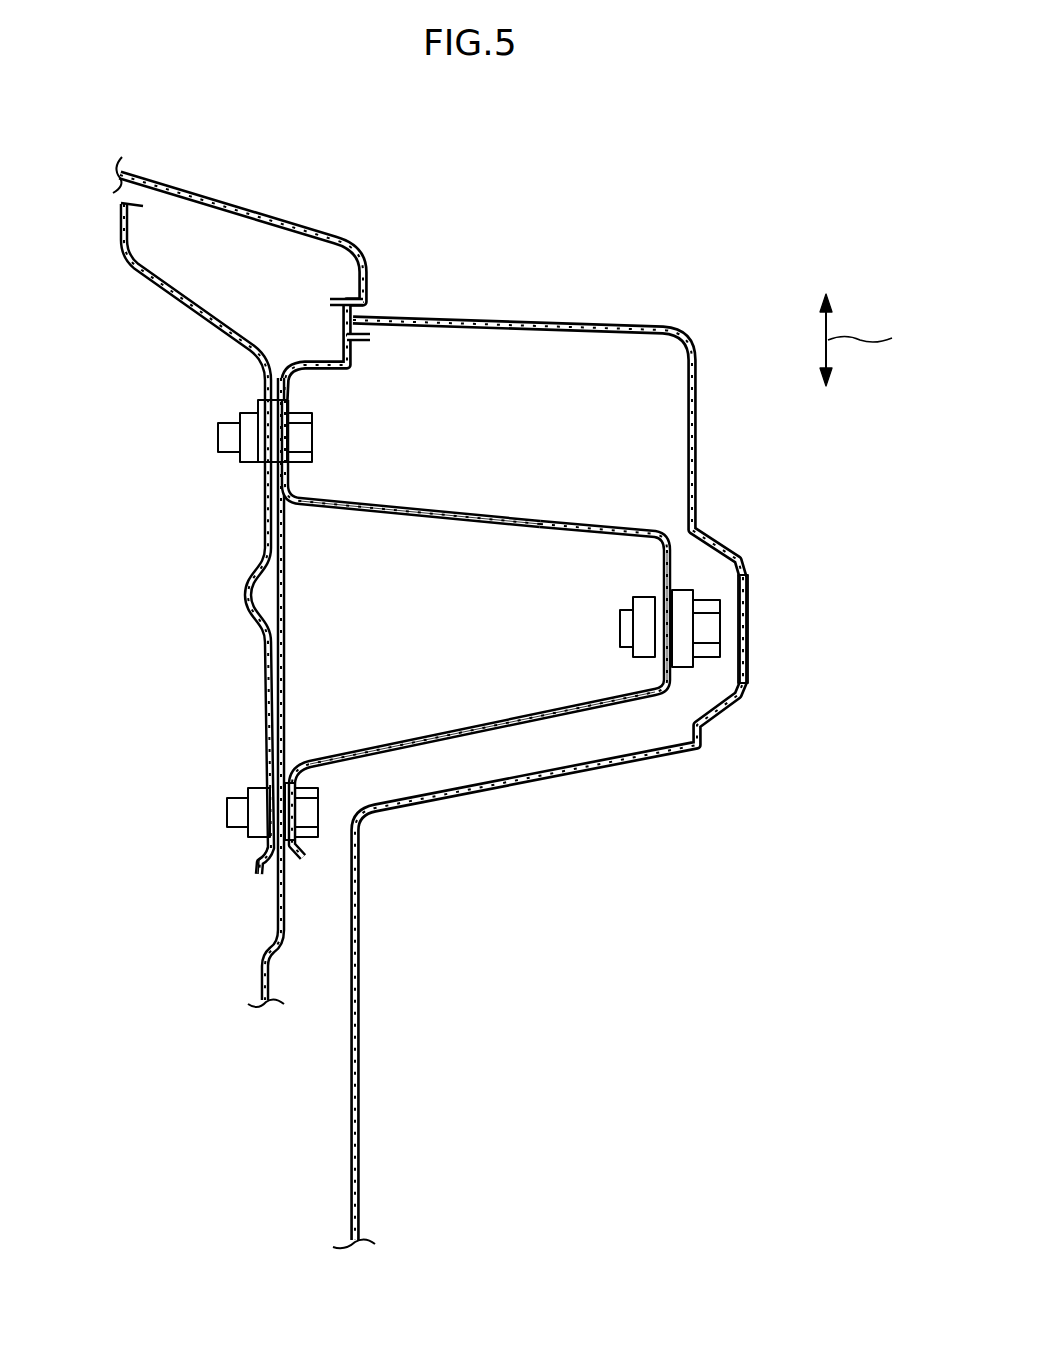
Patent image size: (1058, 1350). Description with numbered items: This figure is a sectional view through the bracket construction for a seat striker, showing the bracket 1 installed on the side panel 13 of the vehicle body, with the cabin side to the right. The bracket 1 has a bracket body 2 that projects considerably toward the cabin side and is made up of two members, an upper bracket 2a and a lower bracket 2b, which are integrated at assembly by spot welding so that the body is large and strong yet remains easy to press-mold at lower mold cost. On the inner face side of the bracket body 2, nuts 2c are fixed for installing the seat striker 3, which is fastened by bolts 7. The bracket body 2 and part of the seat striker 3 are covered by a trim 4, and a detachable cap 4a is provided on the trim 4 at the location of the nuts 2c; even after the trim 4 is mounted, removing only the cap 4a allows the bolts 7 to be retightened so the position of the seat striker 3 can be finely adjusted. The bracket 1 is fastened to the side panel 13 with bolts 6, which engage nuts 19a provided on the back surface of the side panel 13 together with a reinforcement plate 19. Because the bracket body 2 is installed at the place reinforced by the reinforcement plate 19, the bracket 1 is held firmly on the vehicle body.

The bracket 1 is at (565, 527).
The bracket body 2 is at (495, 517).
The upper bracket 2a is at (362, 505).
The lower bracket 2b is at (440, 733).
The nuts 2c is at (635, 612).
The seat striker 3 is at (683, 668).
The trim 4 is at (573, 322).
The detachable cap 4a is at (750, 643).
The bolts 6 is at (312, 428).
The bolts 7 is at (752, 603).
The side panel 13 is at (168, 283).
The reinforcement plate 19 is at (244, 591).
The nuts 19a is at (247, 460).